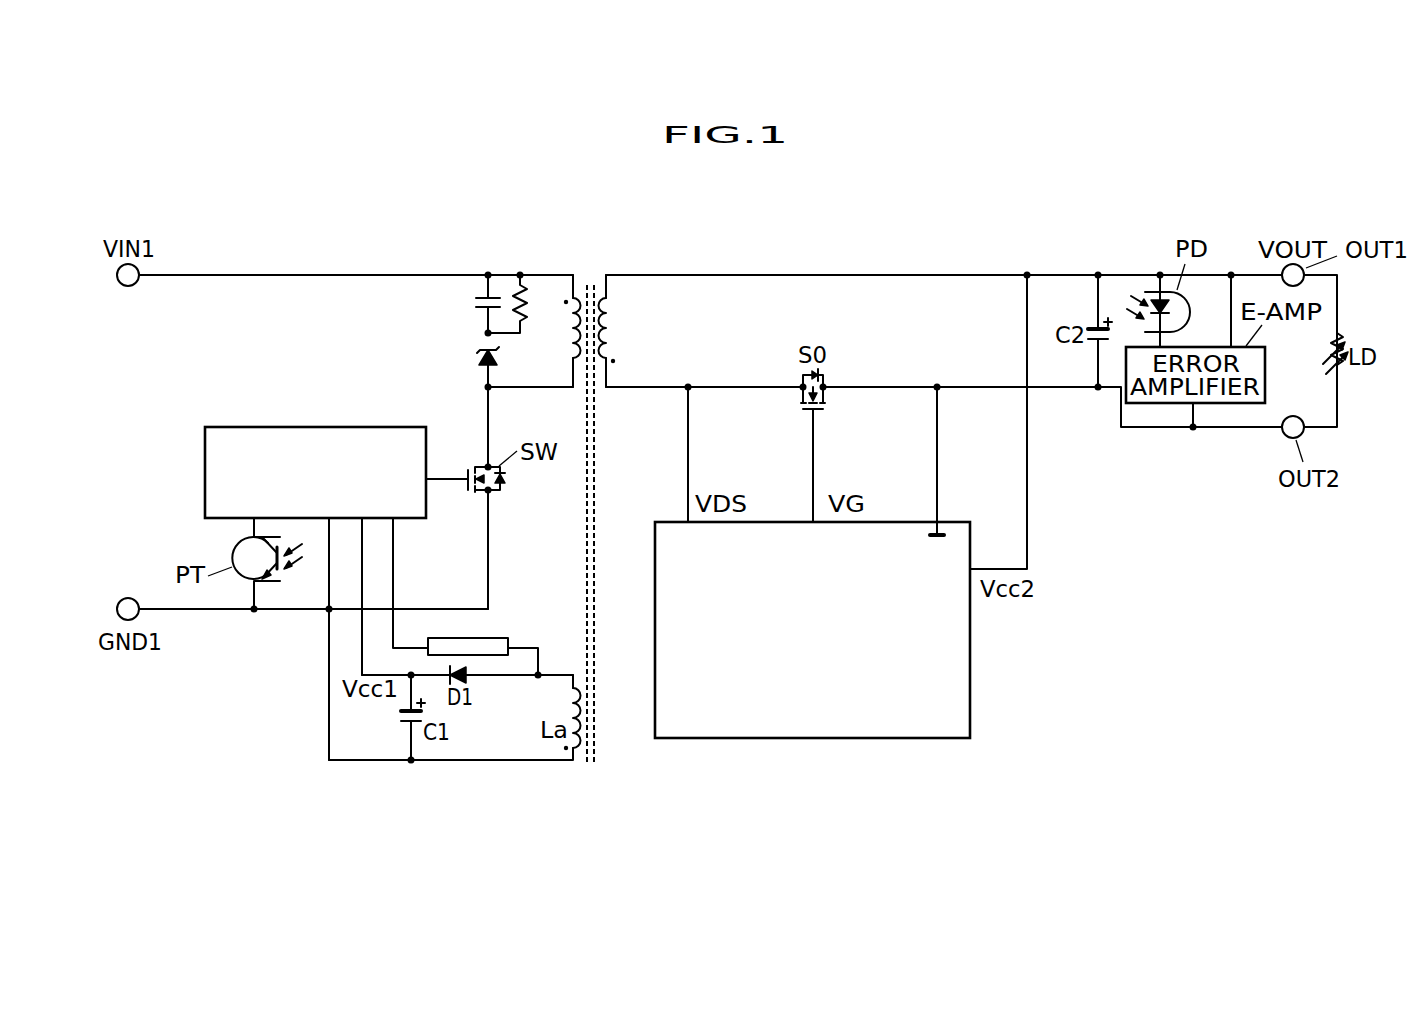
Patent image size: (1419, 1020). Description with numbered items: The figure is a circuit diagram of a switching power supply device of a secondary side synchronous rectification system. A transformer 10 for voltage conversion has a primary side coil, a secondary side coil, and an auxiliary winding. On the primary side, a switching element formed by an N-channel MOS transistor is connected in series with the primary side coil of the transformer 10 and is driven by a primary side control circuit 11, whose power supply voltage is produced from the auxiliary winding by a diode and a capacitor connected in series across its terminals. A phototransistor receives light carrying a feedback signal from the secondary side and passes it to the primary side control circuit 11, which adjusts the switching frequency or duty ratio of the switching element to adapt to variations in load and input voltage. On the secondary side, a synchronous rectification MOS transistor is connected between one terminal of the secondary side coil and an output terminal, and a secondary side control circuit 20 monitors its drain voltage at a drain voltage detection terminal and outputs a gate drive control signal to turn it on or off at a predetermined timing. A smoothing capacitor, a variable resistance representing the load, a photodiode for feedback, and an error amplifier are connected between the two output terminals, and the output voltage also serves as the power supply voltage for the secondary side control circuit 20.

The transformer 10 is at (602, 260).
The primary side control circuit 11 is at (318, 427).
The secondary side control circuit 20 is at (972, 688).